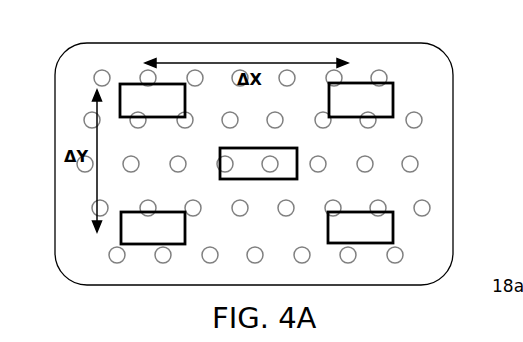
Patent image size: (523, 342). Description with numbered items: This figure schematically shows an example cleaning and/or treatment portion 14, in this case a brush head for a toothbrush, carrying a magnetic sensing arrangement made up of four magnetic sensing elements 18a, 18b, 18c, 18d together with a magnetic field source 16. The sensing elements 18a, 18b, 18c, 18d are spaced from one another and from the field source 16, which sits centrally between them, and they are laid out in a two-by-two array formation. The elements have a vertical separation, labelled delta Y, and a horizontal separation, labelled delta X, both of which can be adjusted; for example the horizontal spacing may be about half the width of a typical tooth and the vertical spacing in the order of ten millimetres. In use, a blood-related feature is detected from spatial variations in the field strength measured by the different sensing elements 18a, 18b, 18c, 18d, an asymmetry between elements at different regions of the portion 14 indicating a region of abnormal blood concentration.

The cleaning and/or treatment portion 14 is at (385, 42).
The magnetic field source 16 is at (258, 163).
The magnetic sensing element 18a is at (143, 83).
The magnetic sensing element 18b is at (152, 243).
The magnetic sensing element 18c is at (373, 87).
The magnetic sensing element 18d is at (380, 212).